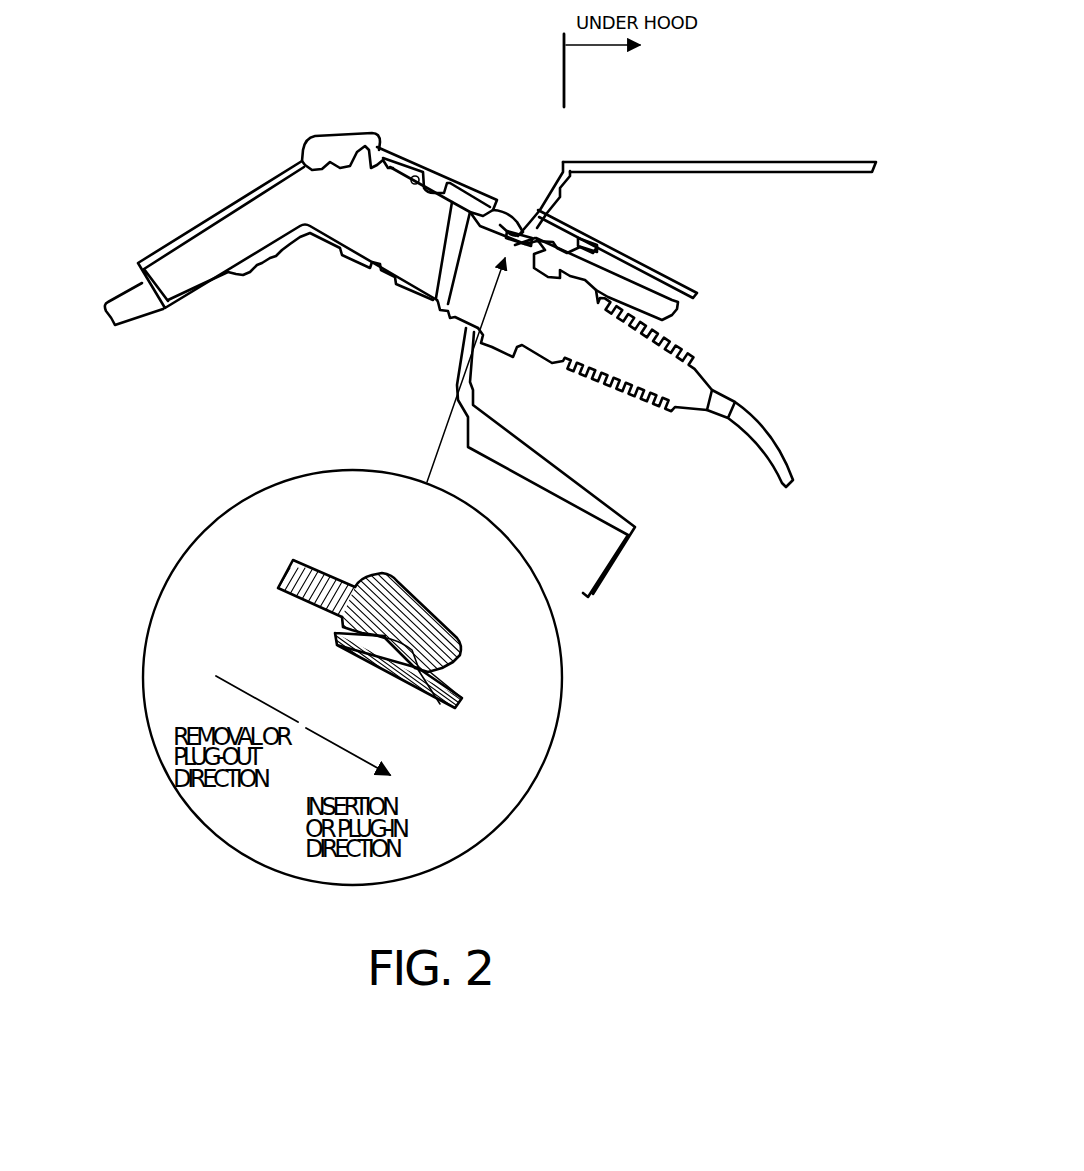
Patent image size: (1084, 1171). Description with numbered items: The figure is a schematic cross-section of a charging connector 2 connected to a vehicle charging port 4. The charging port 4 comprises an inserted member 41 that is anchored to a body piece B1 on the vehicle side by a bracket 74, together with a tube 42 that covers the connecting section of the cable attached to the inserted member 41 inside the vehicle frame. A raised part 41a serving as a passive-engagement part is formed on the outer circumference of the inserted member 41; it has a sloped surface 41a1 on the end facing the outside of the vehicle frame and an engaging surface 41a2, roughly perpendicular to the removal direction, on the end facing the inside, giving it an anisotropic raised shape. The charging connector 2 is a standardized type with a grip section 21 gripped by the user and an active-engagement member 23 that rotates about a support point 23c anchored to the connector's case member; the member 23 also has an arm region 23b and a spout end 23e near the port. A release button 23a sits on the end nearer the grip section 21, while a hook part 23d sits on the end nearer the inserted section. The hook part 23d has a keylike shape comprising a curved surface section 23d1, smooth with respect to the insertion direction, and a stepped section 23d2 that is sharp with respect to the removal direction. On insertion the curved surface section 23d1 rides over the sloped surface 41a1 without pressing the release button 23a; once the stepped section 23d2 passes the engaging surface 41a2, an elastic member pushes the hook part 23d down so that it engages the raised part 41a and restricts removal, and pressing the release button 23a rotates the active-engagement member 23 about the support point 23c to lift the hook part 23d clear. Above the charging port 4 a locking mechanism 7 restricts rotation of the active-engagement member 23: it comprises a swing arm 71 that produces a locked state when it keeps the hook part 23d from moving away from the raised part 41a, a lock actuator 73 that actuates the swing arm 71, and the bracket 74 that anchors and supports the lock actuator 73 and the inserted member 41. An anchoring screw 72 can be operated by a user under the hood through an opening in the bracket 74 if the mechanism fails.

The charging connector 2 is at (258, 174).
The grip section 21 is at (275, 258).
The active-engagement member 23 is at (359, 126).
The release button 23a is at (332, 143).
The spout body 23b is at (452, 203).
The support point 23c is at (420, 175).
The hook part 23d is at (500, 213).
The curved surface section 23d1 is at (440, 674).
The stepped section 23d2 is at (412, 637).
The spout end 23e is at (541, 238).
The charging port 4 is at (458, 333).
The inserted member 41 is at (450, 317).
The raised part 41a is at (520, 233).
The sloped surface 41a1 is at (333, 623).
The engaging surface 41a2 is at (418, 673).
The tube 42 is at (610, 379).
The locking mechanism 7 is at (638, 257).
The swing arm 71 is at (555, 222).
The anchoring screw 72 is at (584, 240).
The lock actuator 73 is at (662, 300).
The bracket 74 is at (690, 285).
The body piece B1 is at (765, 162).